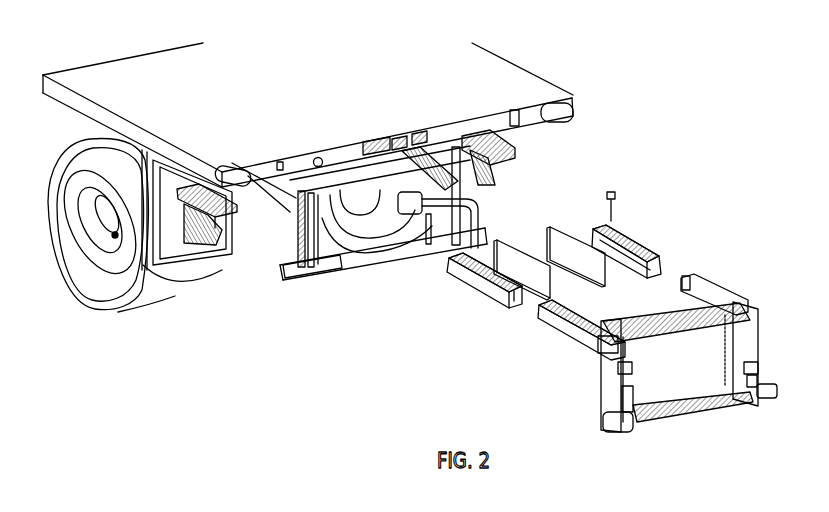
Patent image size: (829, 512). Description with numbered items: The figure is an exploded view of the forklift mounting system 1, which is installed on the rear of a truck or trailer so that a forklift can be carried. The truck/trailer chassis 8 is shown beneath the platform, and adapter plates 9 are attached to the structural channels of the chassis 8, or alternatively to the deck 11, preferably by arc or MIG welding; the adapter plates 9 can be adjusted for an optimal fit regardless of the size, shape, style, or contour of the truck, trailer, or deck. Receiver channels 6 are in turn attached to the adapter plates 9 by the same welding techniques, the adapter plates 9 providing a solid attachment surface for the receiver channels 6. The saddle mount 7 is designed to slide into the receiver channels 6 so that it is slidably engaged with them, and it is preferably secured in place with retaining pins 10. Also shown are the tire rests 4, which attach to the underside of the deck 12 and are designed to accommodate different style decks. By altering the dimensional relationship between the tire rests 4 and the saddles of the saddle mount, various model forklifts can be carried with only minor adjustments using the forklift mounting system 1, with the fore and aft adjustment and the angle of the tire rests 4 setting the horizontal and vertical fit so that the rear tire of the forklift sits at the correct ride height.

The forklift mounting system 1 is at (658, 196).
The tire rests 4 is at (169, 271).
The receiver channels 6 is at (474, 305).
The saddle mount 7 is at (555, 349).
The truck/trailer chassis 8 is at (231, 280).
The adapter plates 9 is at (522, 307).
The retaining pins 10 is at (437, 295).
The deck 11 is at (266, 290).
The deck 12 is at (146, 246).